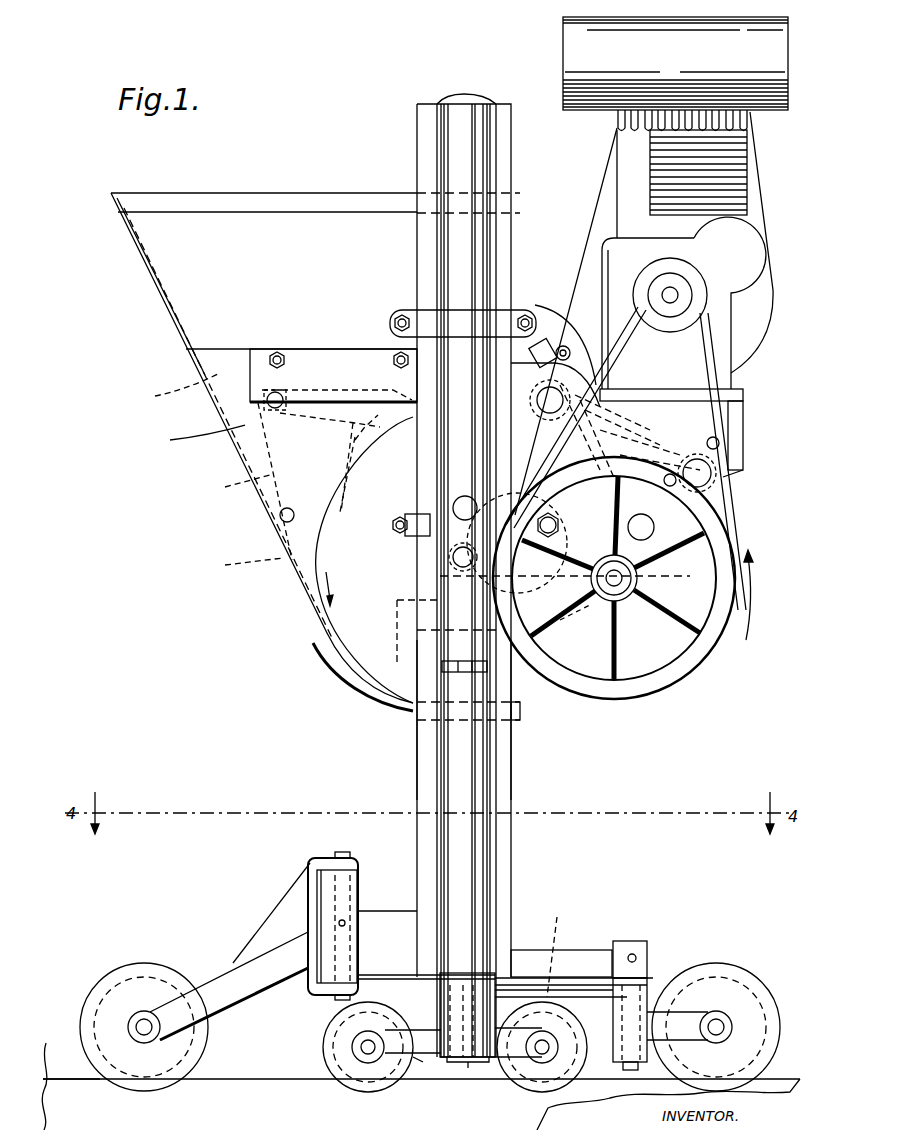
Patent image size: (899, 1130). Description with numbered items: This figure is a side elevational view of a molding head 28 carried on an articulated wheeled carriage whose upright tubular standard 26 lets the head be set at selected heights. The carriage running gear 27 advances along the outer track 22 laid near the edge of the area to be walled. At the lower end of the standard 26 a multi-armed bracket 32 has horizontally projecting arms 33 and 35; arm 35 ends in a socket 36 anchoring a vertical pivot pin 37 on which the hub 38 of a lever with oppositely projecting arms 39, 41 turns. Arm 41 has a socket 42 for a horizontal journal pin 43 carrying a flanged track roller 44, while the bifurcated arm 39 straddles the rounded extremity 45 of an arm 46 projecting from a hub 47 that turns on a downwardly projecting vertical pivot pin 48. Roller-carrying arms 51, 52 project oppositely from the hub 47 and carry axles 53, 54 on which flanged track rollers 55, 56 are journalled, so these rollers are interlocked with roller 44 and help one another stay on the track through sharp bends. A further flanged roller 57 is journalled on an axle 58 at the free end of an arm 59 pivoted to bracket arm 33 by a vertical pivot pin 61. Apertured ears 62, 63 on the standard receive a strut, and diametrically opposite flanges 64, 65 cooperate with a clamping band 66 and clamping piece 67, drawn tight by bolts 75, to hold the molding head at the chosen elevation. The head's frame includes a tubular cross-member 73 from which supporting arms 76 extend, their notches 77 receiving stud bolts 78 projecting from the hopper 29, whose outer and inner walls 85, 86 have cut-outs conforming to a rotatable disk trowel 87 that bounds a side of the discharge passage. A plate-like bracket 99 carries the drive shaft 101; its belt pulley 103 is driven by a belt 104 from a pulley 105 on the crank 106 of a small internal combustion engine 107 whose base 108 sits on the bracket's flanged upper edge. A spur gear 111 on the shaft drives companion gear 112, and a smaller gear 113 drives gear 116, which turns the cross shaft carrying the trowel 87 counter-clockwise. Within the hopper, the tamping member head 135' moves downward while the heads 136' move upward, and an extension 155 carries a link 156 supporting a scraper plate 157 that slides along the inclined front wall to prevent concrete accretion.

The outer track 22 is at (72, 1080).
The upright tubular standard 26 is at (448, 125).
The running gear 27 is at (712, 912).
The molding head 28 is at (150, 341).
The hopper 29 is at (163, 276).
The multi-armed bracket 32 is at (522, 940).
The bracket arm 33 is at (385, 915).
The bracket arm 35 is at (600, 950).
The socket 36 is at (645, 945).
The vertical pivot pin 37 is at (648, 1068).
The hub 38 is at (650, 995).
The lever arm 39 is at (580, 985).
The lever arm 41 is at (703, 1014).
The socket 42 is at (729, 1025).
The horizontal journal pin 43 is at (723, 1023).
The flanged track roller 44 is at (760, 1040).
The rounded extremity 45 is at (565, 949).
The arm 46 is at (512, 985).
The hub 47 is at (445, 1002).
The vertical pivot pin 48 is at (450, 1076).
The roller-carrying arm 51 is at (520, 1058).
The roller-carrying arm 52 is at (424, 1062).
The axle 53 is at (542, 1052).
The axle 54 is at (365, 1052).
The flanged track roller 55 is at (576, 1065).
The flanged track roller 56 is at (325, 1049).
The flanged roller 57 is at (122, 968).
The axle 58 is at (145, 1025).
The arm 59 is at (226, 982).
The vertical pivot pin 61 is at (345, 855).
The apertured ear 62 is at (470, 1068).
The apertured ear 63 is at (448, 673).
The flange 64 is at (418, 774).
The flange 65 is at (505, 775).
The clamping band 66 is at (434, 312).
The clamping piece 67 is at (420, 514).
The tubular cross-member 73 is at (615, 415).
The bolts 75 is at (397, 318).
The supporting arm 76 is at (298, 349).
The notch 77 is at (275, 352).
The stud bolt 78 is at (270, 360).
The outer wall 85 is at (201, 438).
The inner wall 86 is at (173, 390).
The rotatable disk trowel 87 is at (338, 600).
The plate-like bracket 99 is at (727, 425).
The drive shaft 101 is at (632, 592).
The belt pulley 103 is at (706, 648).
The belt 104 is at (707, 360).
The pulley 105 is at (704, 297).
The crank 106 is at (674, 293).
The internal combustion engine 107 is at (752, 195).
The engine base 108 is at (745, 396).
The spur gear 111 is at (574, 578).
The companion gear 112 is at (571, 622).
The smaller gear 113 is at (560, 538).
The companion gear 116 is at (412, 578).
The tamping member head 135' is at (326, 474).
The tamping member heads 136' is at (342, 677).
The extension 155 is at (319, 475).
The link 156 is at (226, 487).
The scraper plate 157 is at (235, 564).